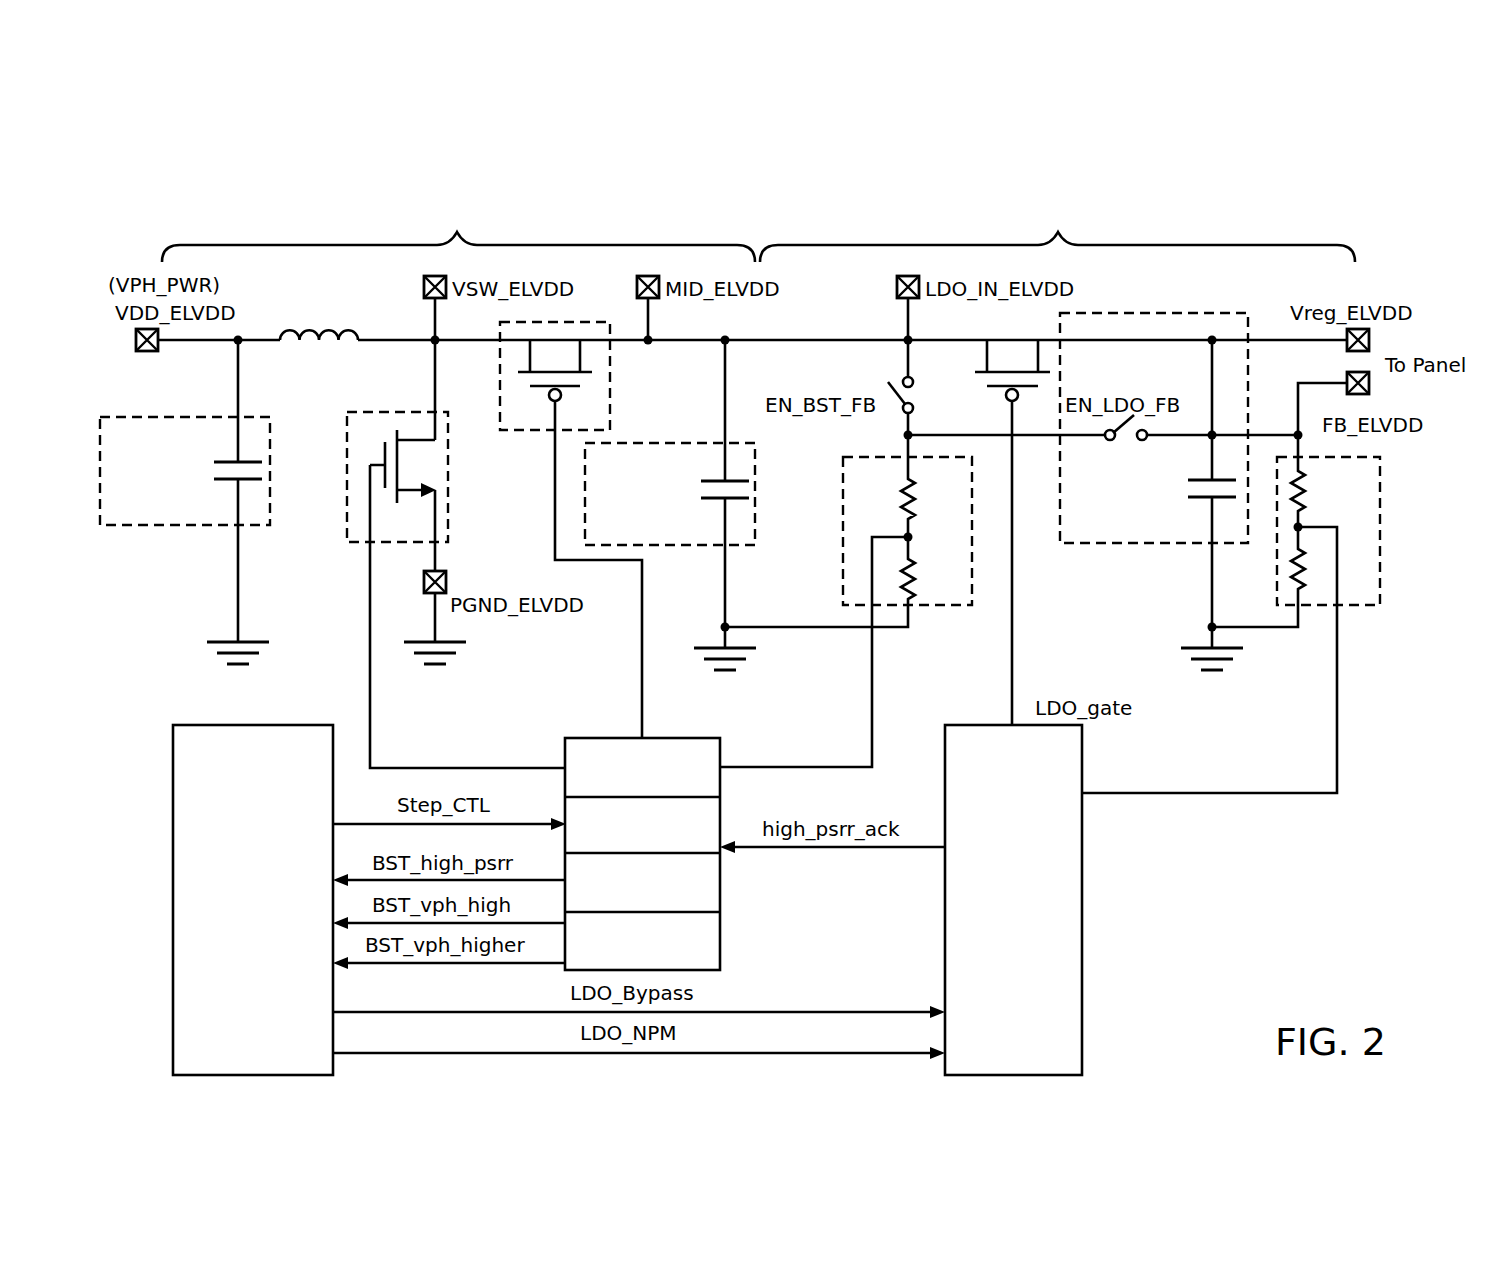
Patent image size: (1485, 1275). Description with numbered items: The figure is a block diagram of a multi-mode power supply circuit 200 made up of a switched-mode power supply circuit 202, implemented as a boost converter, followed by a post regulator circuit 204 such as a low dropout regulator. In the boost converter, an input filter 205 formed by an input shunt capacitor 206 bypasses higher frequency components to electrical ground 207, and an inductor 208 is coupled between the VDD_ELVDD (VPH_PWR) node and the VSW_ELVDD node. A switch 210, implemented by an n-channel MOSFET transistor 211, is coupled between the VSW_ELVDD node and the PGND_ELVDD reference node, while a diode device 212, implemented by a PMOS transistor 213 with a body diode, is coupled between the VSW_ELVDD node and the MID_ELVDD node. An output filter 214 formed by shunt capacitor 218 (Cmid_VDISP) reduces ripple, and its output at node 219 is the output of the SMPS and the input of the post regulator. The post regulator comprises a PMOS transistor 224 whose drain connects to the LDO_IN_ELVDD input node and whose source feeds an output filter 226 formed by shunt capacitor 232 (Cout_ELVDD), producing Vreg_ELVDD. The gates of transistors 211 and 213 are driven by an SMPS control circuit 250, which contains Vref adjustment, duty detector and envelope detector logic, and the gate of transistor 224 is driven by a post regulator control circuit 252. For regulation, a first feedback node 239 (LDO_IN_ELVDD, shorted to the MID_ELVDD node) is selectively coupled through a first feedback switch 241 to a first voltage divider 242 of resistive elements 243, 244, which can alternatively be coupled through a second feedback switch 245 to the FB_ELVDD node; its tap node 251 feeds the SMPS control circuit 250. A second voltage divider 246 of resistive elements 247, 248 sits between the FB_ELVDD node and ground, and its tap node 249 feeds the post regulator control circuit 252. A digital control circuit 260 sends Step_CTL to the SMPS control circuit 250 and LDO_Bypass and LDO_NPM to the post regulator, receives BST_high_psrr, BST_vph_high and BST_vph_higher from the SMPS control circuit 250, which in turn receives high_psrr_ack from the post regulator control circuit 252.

The multi-mode power supply circuit 200 is at (179, 220).
The switched-mode power supply (SMPS) circuit 202 is at (458, 222).
The post regulator circuit 204 is at (1057, 222).
The input filter 205 is at (185, 491).
The input shunt capacitor 206 is at (228, 480).
The electrical ground 207 is at (232, 642).
The inductor 208 is at (308, 326).
The switch 210 is at (452, 554).
The transistor 211 is at (413, 495).
The diode device 212 is at (561, 530).
The transistor 213 is at (525, 448).
The output filter 214 is at (670, 519).
The shunt capacitor 218 is at (716, 498).
The node 219 is at (724, 376).
The transistor 224 is at (1005, 370).
The output filter 226 is at (1154, 470).
The shunt capacitor 232 is at (1205, 478).
The first feedback node 239 is at (906, 362).
The first feedback switch 241 is at (912, 394).
The first voltage divider 242 is at (848, 525).
The resistive element 243 is at (902, 498).
The resistive element 244 is at (914, 580).
The second feedback switch 245 is at (1132, 432).
The second voltage divider 246 is at (1318, 537).
The resistive element 247 is at (1306, 482).
The resistive element 248 is at (1290, 573).
The tap node 249 is at (1165, 795).
The SMPS control circuit 250 is at (722, 942).
The tap node 251 is at (768, 767).
The post regulator control circuit 252 is at (967, 725).
The digital control circuit 260 is at (232, 725).